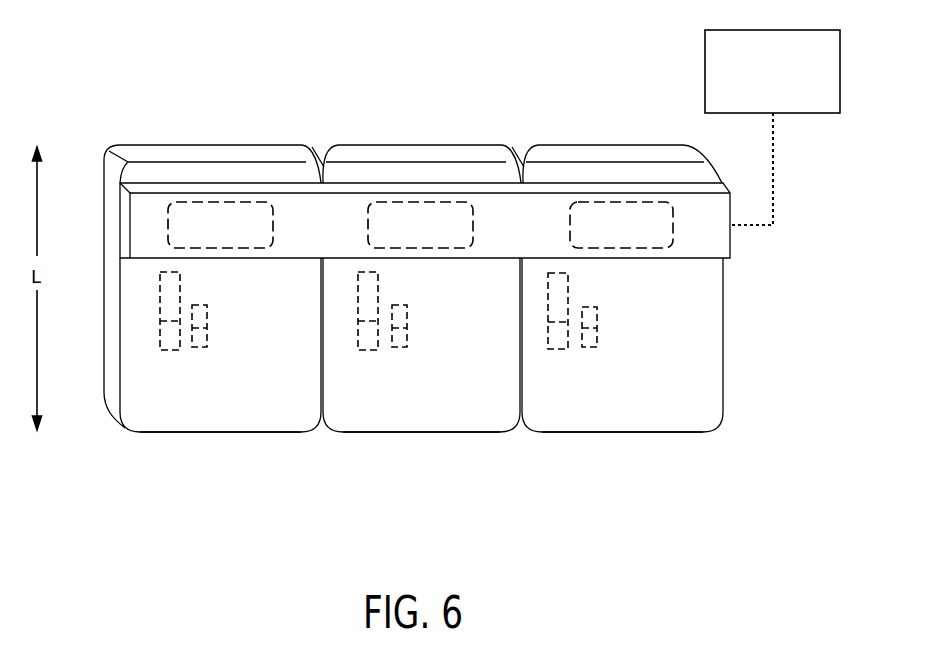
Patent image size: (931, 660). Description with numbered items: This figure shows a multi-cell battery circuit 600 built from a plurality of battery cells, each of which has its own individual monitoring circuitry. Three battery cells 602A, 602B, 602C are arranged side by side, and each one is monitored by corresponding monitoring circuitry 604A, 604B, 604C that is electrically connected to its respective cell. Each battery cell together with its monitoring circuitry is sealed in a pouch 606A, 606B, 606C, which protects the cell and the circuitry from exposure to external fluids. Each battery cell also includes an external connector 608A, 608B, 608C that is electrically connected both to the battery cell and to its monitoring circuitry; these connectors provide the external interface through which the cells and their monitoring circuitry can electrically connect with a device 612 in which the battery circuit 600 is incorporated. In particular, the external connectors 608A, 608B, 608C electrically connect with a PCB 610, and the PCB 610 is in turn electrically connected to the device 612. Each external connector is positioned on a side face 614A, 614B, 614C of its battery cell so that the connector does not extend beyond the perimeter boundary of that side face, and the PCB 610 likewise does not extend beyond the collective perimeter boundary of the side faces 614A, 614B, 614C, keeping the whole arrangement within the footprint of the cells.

The multi-cell battery circuit 600 is at (134, 41).
The battery cell 602A is at (218, 432).
The battery cell 602B is at (418, 432).
The battery cell 602C is at (620, 432).
The monitoring circuitry 604A is at (226, 317).
The monitoring circuitry 604B is at (426, 317).
The monitoring circuitry 604C is at (629, 316).
The pouch 606A is at (293, 432).
The pouch 606B is at (495, 432).
The pouch 606C is at (695, 432).
The external connector 608A is at (150, 210).
The external connector 608B is at (348, 209).
The external connector 608C is at (558, 209).
The PCB 610 is at (730, 247).
The device 612 is at (772, 127).
The side face 614A is at (181, 406).
The side face 614B is at (388, 406).
The side face 614C is at (591, 407).